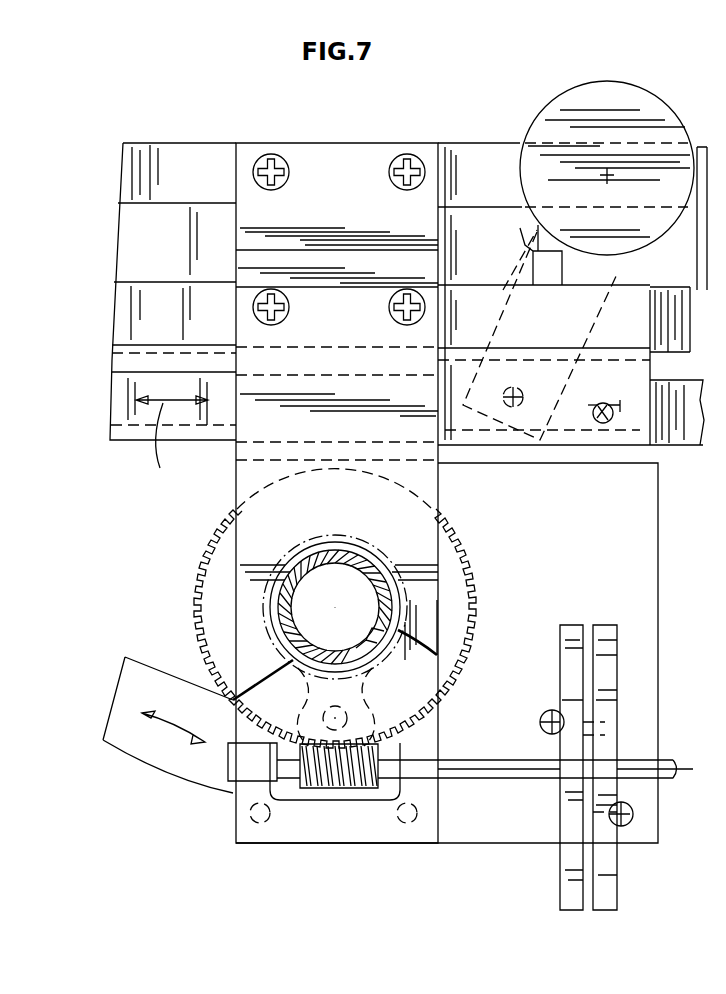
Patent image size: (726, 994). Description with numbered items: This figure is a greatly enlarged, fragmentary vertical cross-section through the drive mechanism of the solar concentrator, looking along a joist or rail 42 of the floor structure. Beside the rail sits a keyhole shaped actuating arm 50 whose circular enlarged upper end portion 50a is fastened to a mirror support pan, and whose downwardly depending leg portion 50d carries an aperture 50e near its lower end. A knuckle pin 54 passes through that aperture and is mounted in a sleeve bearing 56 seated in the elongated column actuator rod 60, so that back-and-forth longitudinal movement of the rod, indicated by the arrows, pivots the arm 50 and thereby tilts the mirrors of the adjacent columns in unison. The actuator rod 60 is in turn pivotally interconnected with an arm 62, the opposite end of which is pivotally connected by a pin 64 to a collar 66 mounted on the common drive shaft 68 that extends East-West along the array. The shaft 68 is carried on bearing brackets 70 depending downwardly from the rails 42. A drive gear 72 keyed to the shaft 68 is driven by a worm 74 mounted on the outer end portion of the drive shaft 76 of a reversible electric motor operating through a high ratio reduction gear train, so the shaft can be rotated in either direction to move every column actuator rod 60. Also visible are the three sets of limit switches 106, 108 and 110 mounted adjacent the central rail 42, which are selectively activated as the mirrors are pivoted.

The joist or rail 42 is at (173, 317).
The keyhole shaped actuating arm 50 is at (640, 266).
The circular enlarged upper end portion 50a is at (680, 80).
The downwardly depending leg portion 50d is at (650, 418).
The aperture 50e is at (612, 423).
The knuckle pin 54 is at (603, 425).
The sleeve bearing 56 is at (593, 423).
The column actuator rod 60 is at (460, 463).
The arm 62 is at (165, 745).
The pin 64 is at (348, 717).
The collar 66 is at (392, 576).
The drive shaft 68 is at (395, 604).
The bearing bracket 70 is at (205, 575).
The drive gear 72 is at (472, 651).
The worm 74 is at (337, 790).
The drive shaft 76 is at (497, 772).
The limit switch set 106 is at (725, 546).
The limit switch set 108 is at (725, 570).
The limit switch set 110 is at (725, 590).